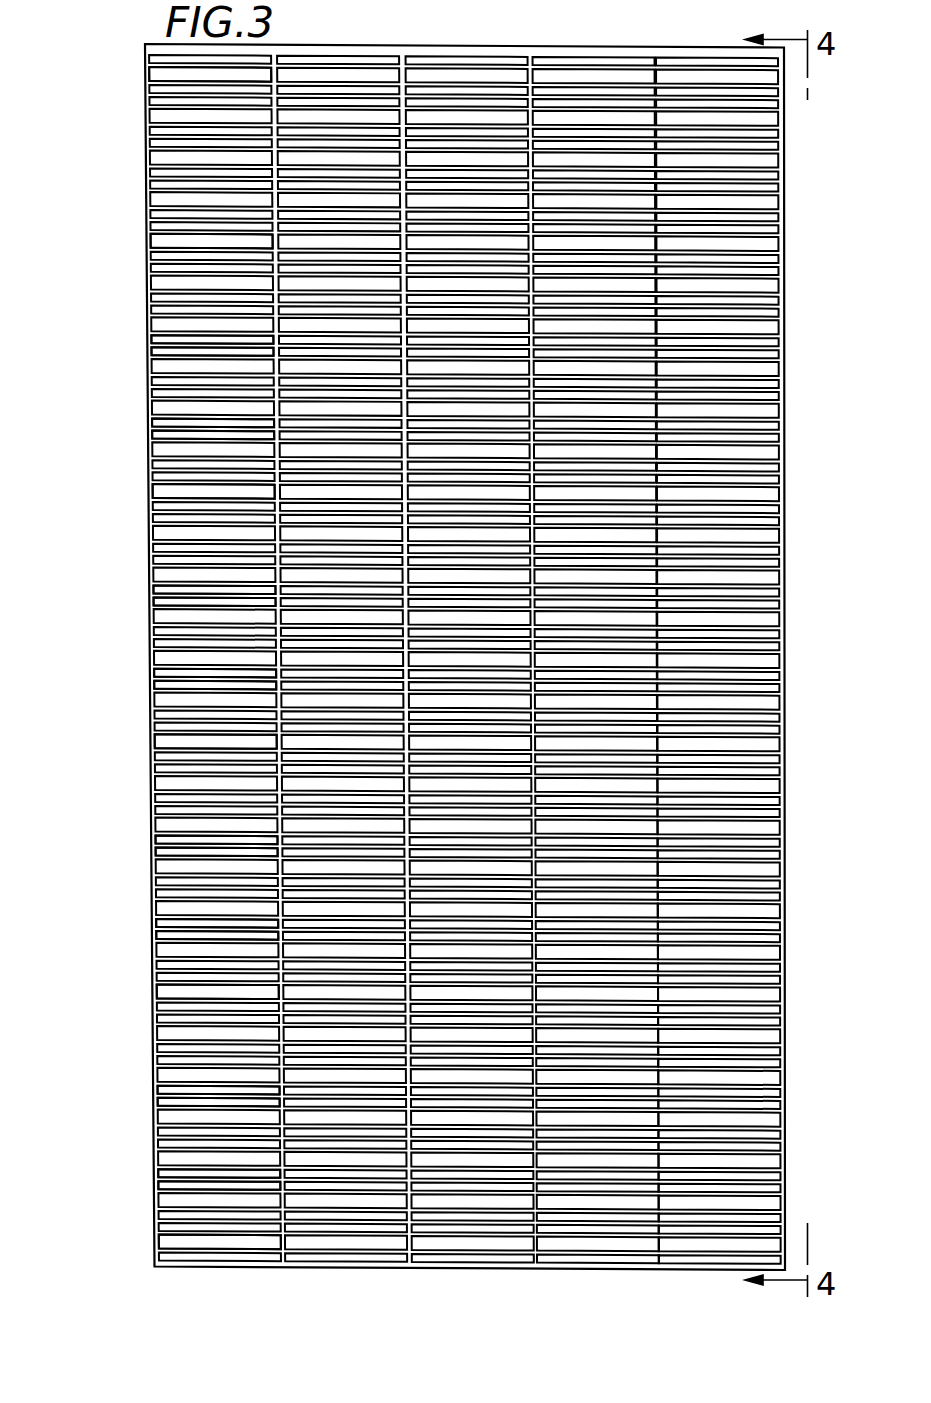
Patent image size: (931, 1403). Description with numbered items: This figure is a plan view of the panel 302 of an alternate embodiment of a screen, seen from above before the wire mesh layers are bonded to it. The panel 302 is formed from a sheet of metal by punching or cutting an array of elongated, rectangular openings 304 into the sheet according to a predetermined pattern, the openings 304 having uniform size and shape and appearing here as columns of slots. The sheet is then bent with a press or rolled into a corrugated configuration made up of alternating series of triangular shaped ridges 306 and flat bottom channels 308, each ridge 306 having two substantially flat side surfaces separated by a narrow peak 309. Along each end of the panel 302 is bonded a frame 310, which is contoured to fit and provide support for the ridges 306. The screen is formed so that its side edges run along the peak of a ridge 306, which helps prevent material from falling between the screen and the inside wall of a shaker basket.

The grid panel 302 is at (410, 636).
The aperture 304 is at (155, 73).
The rib 306 is at (146, 429).
The slot 308 is at (147, 491).
The narrow slots 309 is at (146, 351).
The frame 310 is at (147, 119).